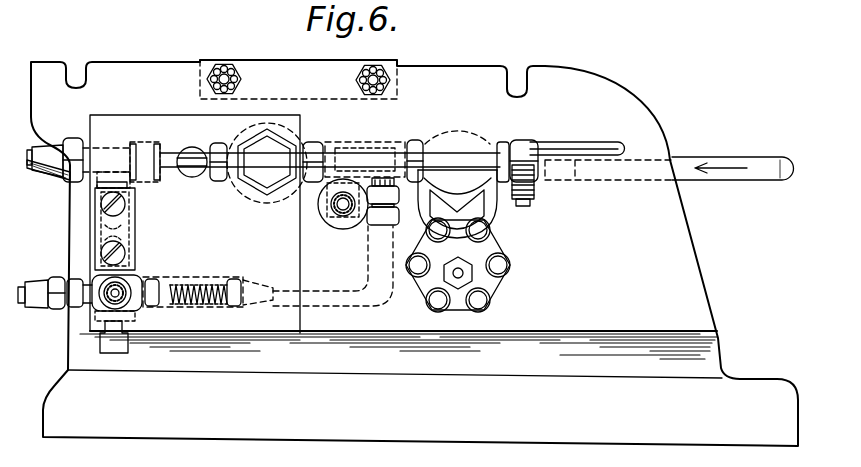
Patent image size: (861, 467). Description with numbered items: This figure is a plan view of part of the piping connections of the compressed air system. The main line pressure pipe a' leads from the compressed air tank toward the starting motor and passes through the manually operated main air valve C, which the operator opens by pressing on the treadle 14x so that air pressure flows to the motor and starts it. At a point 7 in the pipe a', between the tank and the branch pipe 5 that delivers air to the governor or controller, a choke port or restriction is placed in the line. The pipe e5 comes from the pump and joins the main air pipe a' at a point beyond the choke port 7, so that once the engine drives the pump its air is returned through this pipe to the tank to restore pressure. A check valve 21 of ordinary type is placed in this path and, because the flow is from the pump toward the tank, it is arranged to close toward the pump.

The main line pressure pipe a' is at (410, 162).
The manually operated main air valve C is at (247, 201).
The treadle 14x is at (274, 162).
The choke port 7 is at (362, 152).
The pipe leading to the governor 5 is at (336, 222).
The pipe from the pump e5 is at (345, 296).
The check valve 21 is at (180, 307).